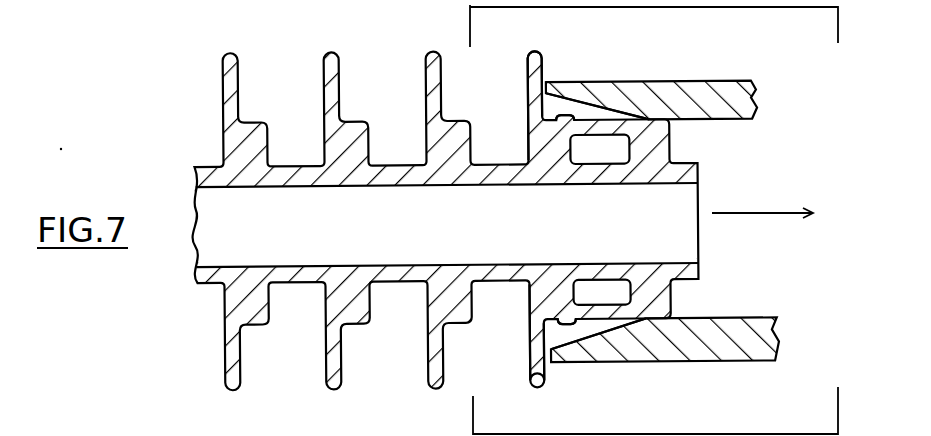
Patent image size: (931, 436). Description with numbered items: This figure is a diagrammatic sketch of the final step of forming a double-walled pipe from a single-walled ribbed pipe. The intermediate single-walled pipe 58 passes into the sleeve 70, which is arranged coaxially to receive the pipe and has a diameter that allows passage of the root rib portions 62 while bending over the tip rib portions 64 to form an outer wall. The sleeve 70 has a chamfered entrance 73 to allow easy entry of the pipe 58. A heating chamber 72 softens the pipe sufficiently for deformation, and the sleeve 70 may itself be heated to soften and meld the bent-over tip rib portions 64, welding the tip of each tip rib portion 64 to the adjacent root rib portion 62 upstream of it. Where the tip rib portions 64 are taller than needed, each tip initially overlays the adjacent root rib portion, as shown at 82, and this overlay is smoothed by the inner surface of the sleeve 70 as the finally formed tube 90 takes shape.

The intermediate single-walled pipe 58 is at (196, 51).
The root rib portion 62 is at (545, 147).
The tip rib portion 64 is at (537, 77).
The sleeve 70 is at (687, 97).
The heating chamber 72 is at (470, 30).
The chamfered entrance 73 is at (568, 117).
The overlay of tip rib portion on adjacent root rib portion 82 is at (547, 93).
The finally formed tube 90 is at (150, 435).